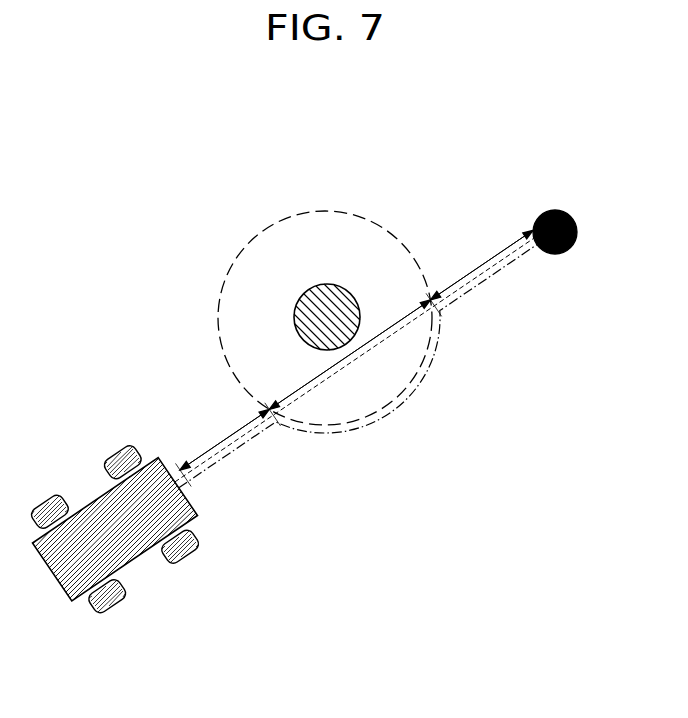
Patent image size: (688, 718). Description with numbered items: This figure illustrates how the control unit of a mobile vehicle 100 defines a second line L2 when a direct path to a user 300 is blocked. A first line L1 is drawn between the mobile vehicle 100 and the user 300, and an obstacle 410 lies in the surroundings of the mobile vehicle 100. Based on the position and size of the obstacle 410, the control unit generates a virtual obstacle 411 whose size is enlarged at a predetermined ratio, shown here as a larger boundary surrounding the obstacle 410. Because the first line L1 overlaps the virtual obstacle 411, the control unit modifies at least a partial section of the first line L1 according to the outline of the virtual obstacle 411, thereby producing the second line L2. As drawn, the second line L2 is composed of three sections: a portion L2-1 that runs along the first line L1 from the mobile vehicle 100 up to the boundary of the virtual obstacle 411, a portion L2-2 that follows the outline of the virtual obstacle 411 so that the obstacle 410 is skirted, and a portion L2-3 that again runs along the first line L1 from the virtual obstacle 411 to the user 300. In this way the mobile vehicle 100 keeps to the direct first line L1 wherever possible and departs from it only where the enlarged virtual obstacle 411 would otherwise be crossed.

The mobile vehicle 100 is at (100, 496).
The user 300 is at (568, 215).
The obstacle 410 is at (343, 290).
The virtual obstacle 411 is at (252, 245).
The first line L1 is at (515, 250).
The second line L2 is at (508, 272).
The portion of the second line along the first line L2-1 is at (223, 447).
The portion of the second line along the outline of the virtual obstacle L2-2 is at (348, 363).
The portion of the second line along the first line L2-3 is at (479, 273).